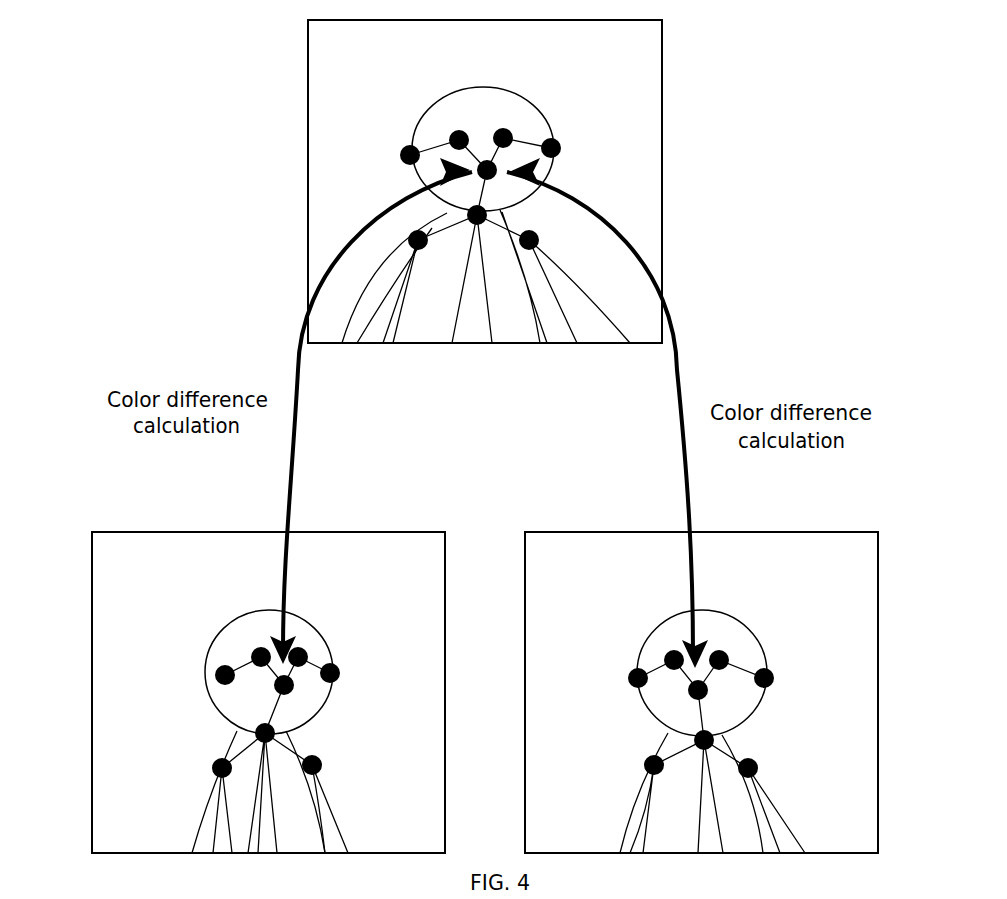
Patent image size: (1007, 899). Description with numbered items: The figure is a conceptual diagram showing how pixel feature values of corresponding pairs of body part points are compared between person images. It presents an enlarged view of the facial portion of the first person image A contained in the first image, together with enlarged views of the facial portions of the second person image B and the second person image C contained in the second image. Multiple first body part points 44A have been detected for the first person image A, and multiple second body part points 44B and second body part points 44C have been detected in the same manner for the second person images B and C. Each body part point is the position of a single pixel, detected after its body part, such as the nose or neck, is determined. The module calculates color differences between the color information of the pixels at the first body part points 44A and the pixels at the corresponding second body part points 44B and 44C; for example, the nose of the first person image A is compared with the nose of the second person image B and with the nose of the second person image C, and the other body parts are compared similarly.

The first person image A is at (567, 108).
The second person image B is at (212, 725).
The second person image C is at (792, 740).
The first body part points 44A is at (551, 148).
The second body part points 44B is at (330, 673).
The second body part points 44C is at (764, 678).